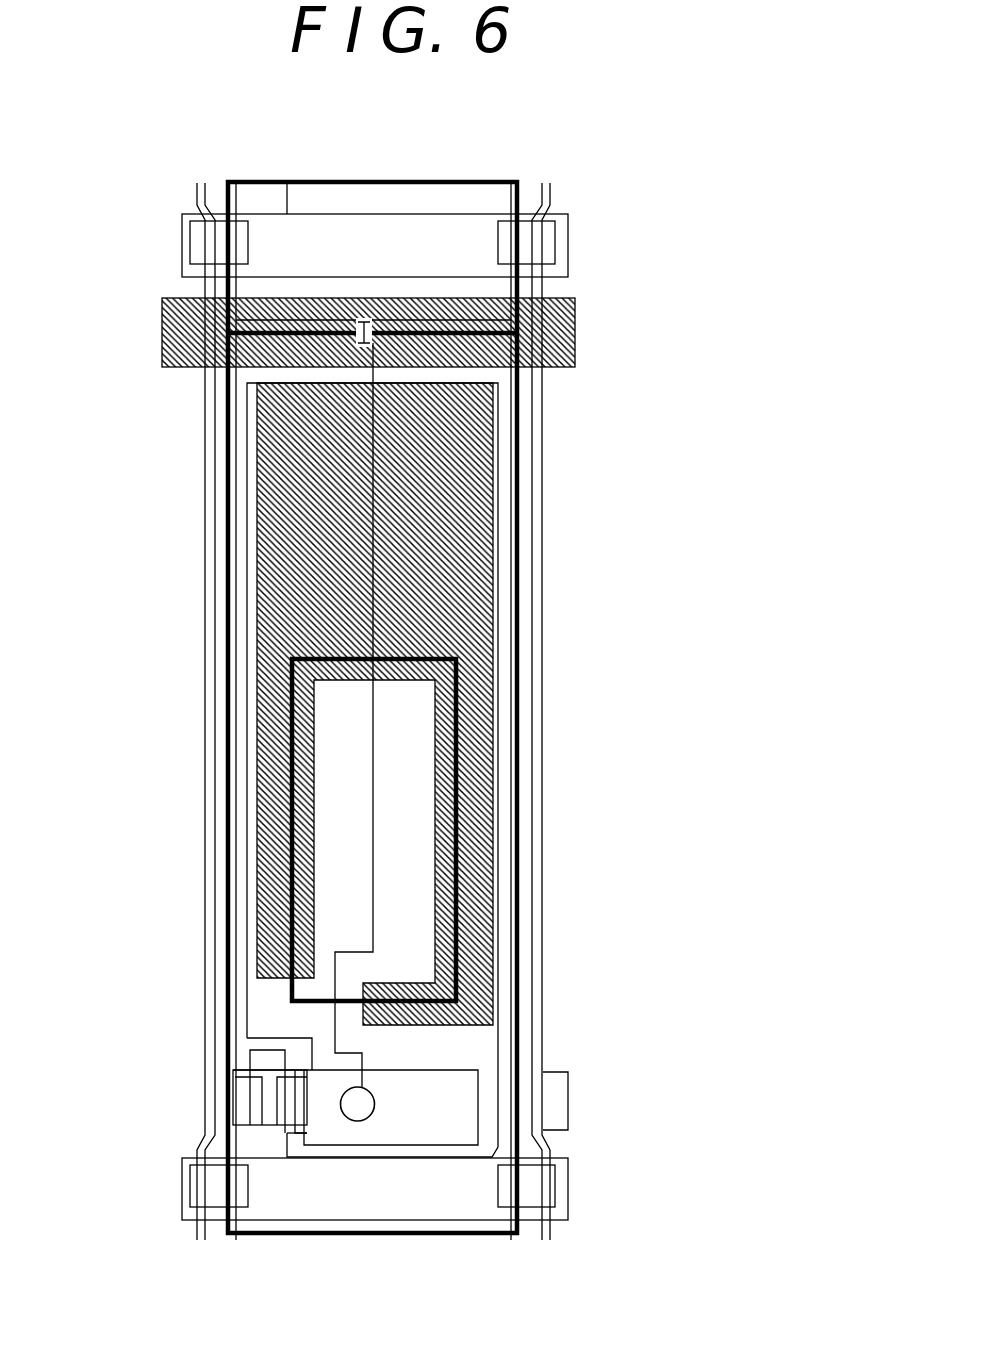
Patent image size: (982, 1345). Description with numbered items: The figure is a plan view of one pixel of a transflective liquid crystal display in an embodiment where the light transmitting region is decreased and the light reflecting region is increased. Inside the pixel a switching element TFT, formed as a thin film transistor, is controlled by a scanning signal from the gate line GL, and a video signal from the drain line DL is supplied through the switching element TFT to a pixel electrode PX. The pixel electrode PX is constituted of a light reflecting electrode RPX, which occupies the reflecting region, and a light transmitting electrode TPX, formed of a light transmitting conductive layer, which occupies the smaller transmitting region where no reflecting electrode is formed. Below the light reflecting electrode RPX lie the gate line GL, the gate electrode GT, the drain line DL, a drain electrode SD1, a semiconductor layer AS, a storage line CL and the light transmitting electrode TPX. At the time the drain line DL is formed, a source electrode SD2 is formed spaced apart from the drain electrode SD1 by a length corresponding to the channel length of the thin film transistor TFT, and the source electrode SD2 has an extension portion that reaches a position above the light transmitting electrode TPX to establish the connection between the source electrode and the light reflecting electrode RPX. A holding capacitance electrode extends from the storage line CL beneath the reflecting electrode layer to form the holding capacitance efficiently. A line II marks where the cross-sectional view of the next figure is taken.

The gate line GL is at (568, 227).
The storage line CL is at (573, 350).
The drain line DL is at (205, 1060).
The pixel electrode PX is at (720, 630).
The light reflecting electrode RPX is at (515, 656).
The light transmitting electrode TPX is at (410, 703).
The gate electrode GT is at (267, 1050).
The semiconductor layer AS is at (260, 1137).
The drain electrode SD1 is at (243, 1130).
The source electrode SD2 is at (458, 1078).
The switching element (thin film transistor) TFT is at (313, 1138).
The line II- II is at (340, 1098).